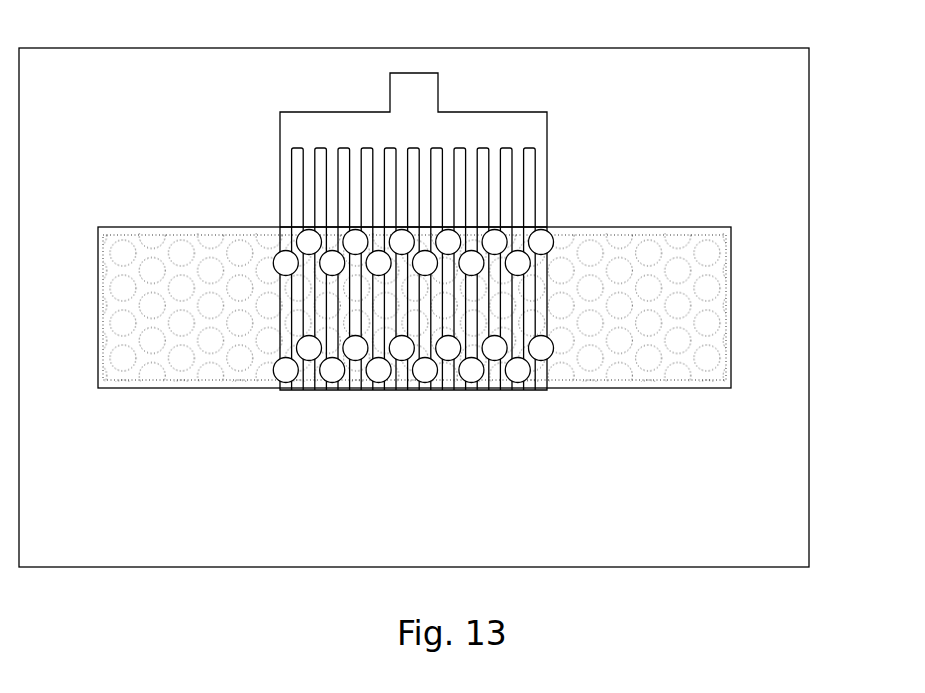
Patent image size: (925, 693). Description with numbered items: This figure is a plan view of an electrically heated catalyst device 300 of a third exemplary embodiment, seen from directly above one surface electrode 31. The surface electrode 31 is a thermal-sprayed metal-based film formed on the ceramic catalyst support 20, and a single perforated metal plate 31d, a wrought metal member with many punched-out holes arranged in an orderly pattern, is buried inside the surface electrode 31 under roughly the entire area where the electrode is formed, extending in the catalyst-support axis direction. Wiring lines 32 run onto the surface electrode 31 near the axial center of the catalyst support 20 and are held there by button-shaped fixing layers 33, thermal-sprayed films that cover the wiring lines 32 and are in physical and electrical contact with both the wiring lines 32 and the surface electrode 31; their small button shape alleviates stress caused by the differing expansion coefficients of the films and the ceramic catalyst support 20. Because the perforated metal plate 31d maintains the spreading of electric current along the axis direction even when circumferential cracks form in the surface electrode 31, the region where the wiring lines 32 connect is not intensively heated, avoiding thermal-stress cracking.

The electrically heated catalyst device 300 is at (834, 105).
The catalyst support 20 is at (800, 505).
The surface electrode 31 is at (443, 275).
The perforated metal plate 31d is at (718, 245).
The wiring lines 32 is at (547, 165).
The fixing layers 33 is at (277, 386).